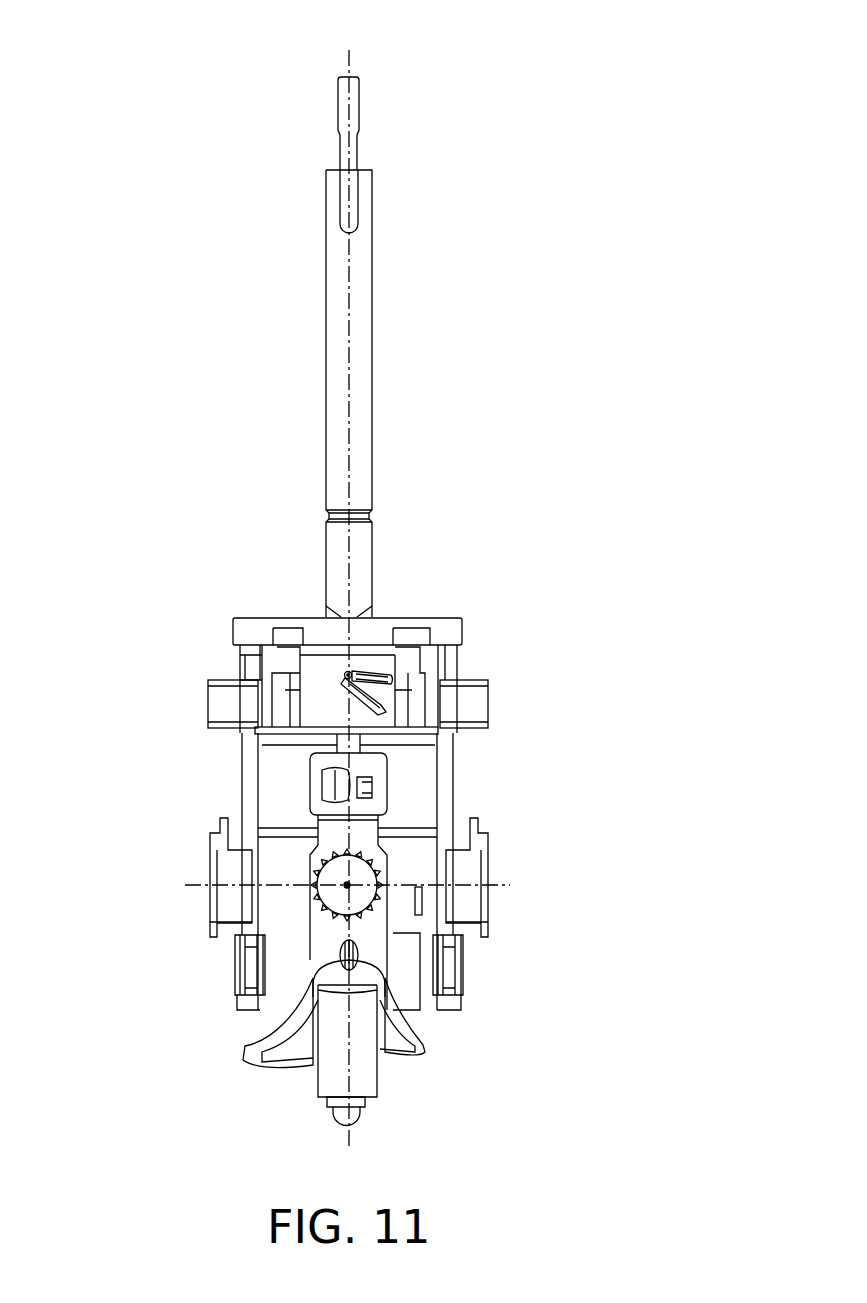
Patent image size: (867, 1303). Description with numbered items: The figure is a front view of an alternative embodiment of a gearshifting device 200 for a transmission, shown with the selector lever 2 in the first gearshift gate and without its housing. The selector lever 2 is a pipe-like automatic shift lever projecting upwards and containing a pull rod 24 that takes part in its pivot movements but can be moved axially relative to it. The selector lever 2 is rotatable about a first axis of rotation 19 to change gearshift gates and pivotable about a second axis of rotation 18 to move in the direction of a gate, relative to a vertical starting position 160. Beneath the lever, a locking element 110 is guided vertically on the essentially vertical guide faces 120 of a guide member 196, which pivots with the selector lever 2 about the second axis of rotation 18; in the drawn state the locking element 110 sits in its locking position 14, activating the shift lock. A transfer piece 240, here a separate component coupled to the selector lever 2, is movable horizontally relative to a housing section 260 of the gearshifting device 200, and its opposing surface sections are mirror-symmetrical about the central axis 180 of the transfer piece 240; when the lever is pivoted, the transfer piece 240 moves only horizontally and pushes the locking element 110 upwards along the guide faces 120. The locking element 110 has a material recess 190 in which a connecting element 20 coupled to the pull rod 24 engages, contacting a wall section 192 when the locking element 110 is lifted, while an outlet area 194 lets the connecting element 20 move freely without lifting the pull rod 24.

The selector lever 2 is at (362, 318).
The locking position 14 is at (494, 676).
The second axis of rotation 18 is at (185, 884).
The first axis of rotation 19 is at (349, 884).
The connecting element 20 is at (352, 674).
The pull rod 24 is at (357, 144).
The locking element 110 is at (305, 688).
The guide face 120 is at (256, 677).
The vertical starting position 160 is at (349, 60).
The central axis of the transfer piece 180 is at (308, 740).
The material recess 190 is at (380, 691).
The wall section 192 is at (347, 673).
The outlet area 194 is at (385, 712).
The guide member 196 is at (247, 665).
The gearshifting device 200 is at (163, 549).
The transfer piece 240 is at (342, 738).
The housing section 260 is at (336, 724).